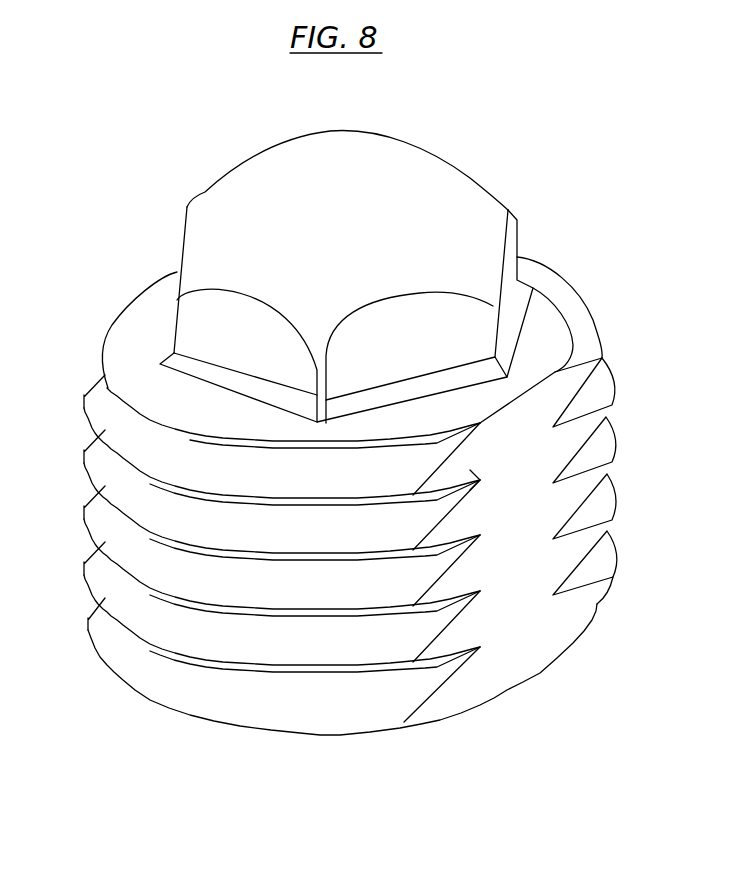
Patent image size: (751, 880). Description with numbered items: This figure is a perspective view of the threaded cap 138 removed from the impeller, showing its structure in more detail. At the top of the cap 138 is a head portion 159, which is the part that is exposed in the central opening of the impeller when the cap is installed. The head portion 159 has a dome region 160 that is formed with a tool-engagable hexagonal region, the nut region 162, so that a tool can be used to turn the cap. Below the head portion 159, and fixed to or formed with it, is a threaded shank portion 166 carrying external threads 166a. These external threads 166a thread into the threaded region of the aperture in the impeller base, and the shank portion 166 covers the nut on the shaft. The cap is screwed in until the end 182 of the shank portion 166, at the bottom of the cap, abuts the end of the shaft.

The head portion 159 is at (391, 249).
The dome region 160 is at (333, 244).
The nut region 162 is at (421, 360).
The threaded cap 138 is at (412, 520).
The end of the shank portion 182 is at (560, 640).
The threaded shank portion 166 is at (526, 605).
The external threads 166a is at (450, 582).